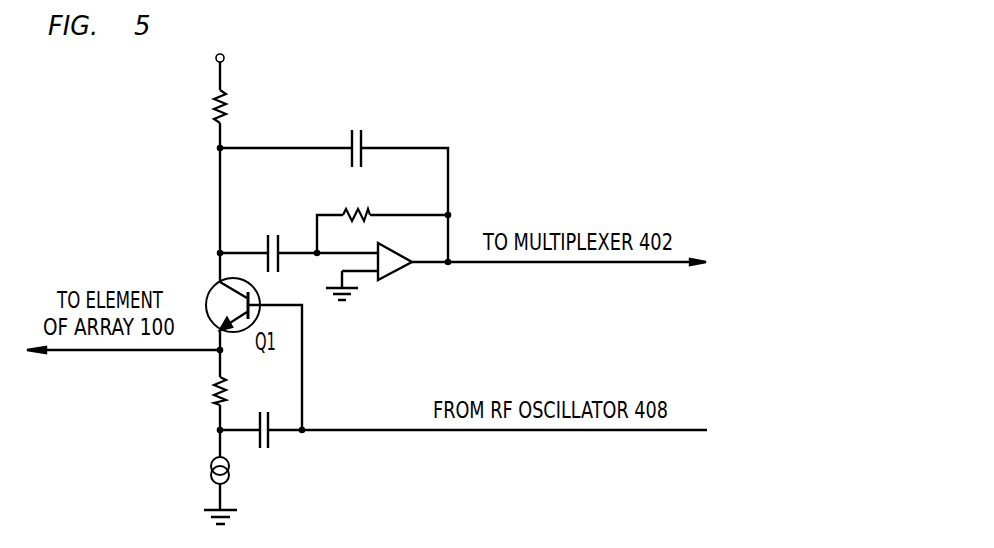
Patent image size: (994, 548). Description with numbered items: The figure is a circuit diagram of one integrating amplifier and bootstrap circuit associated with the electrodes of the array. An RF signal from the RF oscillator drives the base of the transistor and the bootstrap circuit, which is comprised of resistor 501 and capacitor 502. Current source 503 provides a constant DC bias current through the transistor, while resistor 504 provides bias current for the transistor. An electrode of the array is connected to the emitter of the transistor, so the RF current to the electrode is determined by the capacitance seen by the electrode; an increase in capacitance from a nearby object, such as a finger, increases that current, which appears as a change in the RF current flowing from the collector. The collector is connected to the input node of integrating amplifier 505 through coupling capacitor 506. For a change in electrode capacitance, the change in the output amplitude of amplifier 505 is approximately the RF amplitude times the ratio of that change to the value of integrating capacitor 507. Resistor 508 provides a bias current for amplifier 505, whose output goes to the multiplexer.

The resistor 501 is at (202, 392).
The capacitor 502 is at (263, 417).
The current source 503 is at (203, 472).
The resistor 504 is at (242, 107).
The integrating amplifier 505 is at (399, 274).
The coupling capacitor 506 is at (271, 238).
The integrating capacitor 507 is at (356, 135).
The resistor 508 is at (354, 200).